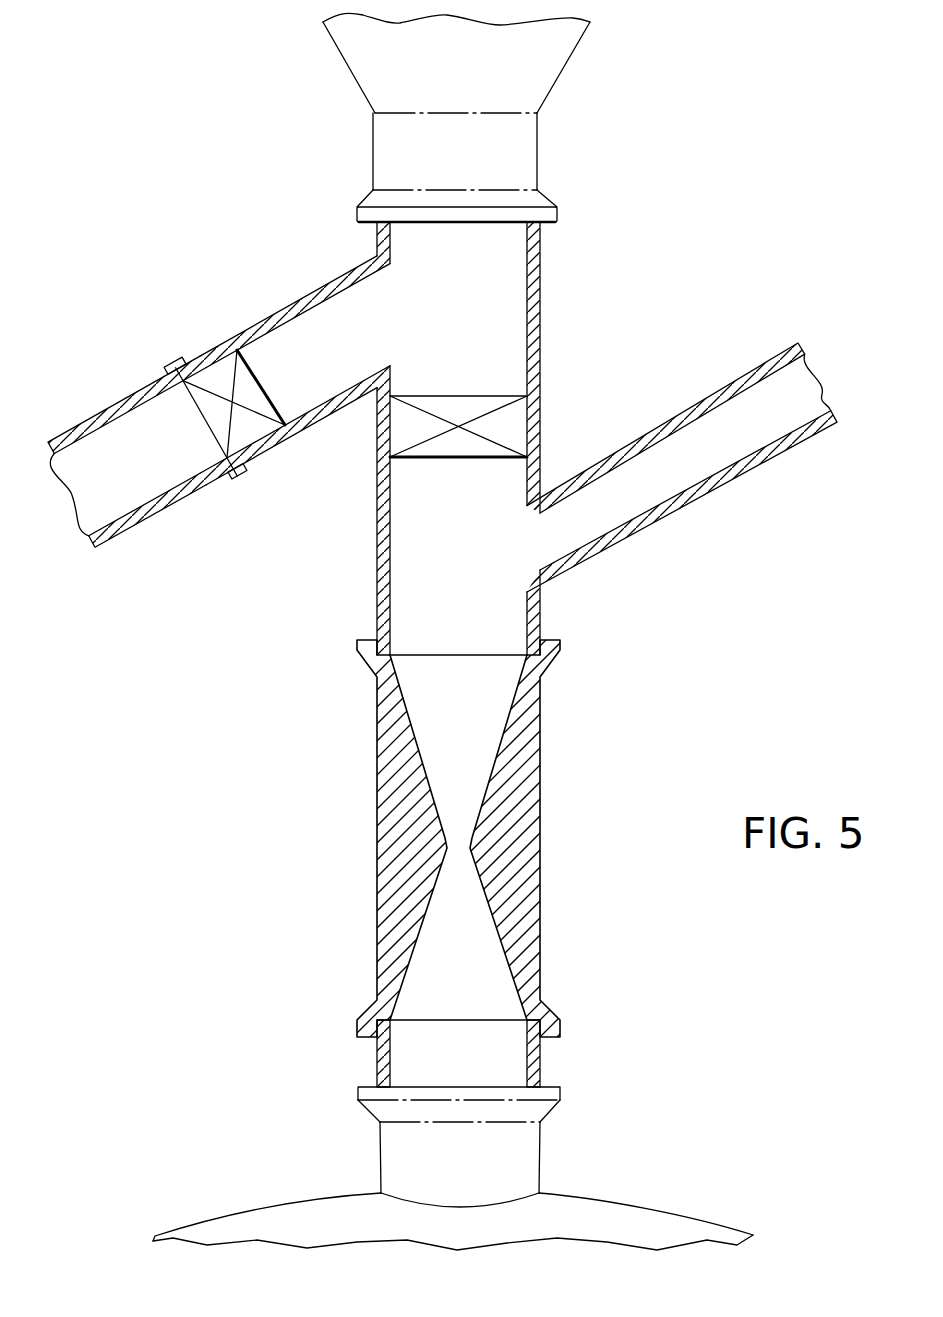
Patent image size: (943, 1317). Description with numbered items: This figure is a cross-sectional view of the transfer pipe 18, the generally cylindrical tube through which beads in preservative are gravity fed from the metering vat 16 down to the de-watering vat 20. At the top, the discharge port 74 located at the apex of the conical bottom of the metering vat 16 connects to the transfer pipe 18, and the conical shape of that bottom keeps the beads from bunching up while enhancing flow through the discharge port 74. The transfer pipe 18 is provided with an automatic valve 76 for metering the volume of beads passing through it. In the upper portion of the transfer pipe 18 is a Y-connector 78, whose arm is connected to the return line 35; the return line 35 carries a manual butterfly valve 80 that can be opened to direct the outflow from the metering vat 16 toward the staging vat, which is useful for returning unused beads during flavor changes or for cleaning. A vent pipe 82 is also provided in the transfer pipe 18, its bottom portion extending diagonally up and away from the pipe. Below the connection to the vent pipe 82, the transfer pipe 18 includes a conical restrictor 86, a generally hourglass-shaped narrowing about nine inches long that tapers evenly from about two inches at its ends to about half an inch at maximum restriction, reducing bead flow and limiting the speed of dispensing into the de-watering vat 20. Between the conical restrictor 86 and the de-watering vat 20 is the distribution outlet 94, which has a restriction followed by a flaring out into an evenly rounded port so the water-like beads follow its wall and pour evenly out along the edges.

The metering vat 16 is at (341, 69).
The transfer pipe 18 is at (662, 1018).
The de-watering vat 20 is at (228, 1222).
The return line 35 is at (114, 395).
The discharge port 74 is at (527, 160).
The automatic valve 76 is at (517, 427).
The Y-connector 78 is at (317, 290).
The manual butterfly valve 80 is at (222, 367).
The vent pipe 82 is at (703, 497).
The conical restrictor 86 is at (370, 808).
The distribution outlet 94 is at (523, 1157).